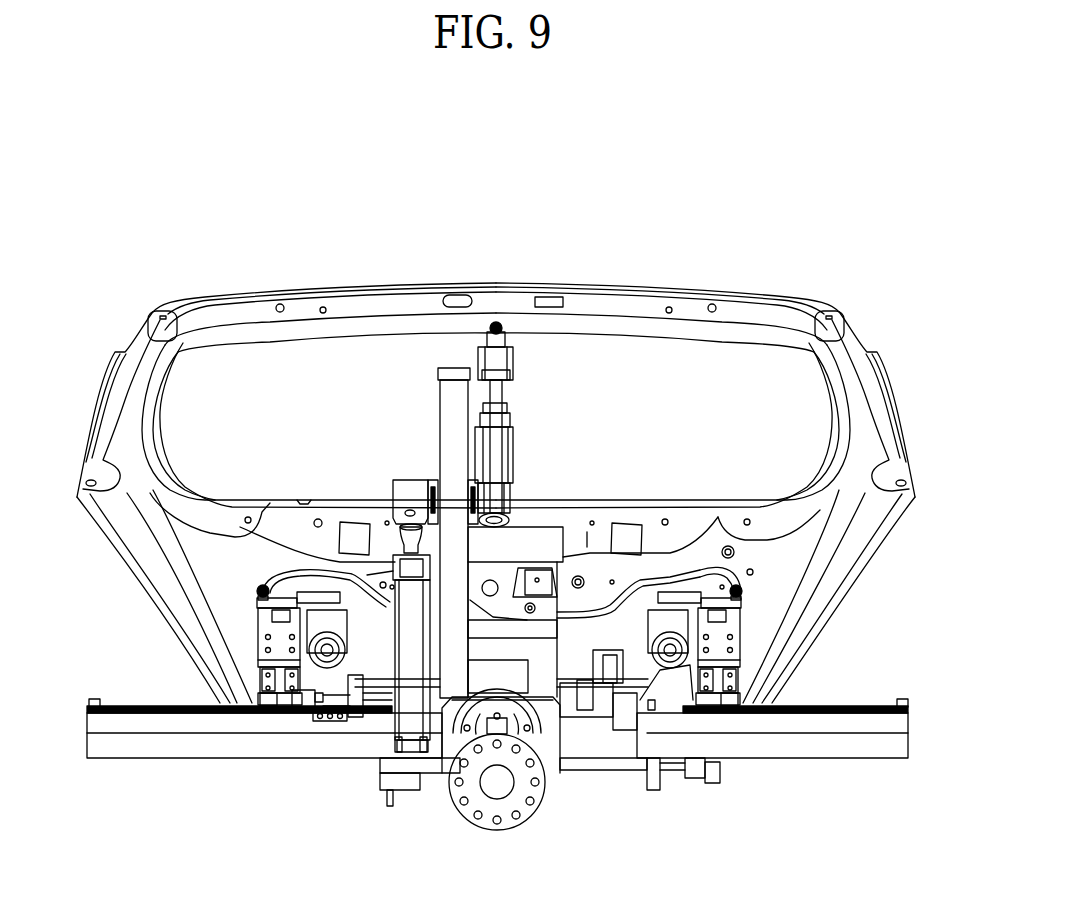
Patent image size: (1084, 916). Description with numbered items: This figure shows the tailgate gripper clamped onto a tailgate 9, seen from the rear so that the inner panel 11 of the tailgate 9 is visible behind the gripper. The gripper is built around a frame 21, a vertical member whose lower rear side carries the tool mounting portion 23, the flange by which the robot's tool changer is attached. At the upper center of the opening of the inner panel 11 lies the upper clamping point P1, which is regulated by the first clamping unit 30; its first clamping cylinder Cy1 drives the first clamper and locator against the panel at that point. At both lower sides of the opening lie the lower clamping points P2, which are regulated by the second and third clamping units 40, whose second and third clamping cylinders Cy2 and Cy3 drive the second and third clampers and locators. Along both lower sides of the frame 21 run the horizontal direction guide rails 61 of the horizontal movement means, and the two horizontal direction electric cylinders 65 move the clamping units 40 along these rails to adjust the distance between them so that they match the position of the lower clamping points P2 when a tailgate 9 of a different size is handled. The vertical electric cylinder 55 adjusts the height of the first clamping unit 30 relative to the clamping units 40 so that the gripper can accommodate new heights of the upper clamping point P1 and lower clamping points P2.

The tailgate 9 is at (803, 272).
The inner panel 11 is at (768, 543).
The frame 21 is at (452, 668).
The tool mounting portion 23 is at (513, 816).
The first clamping unit 30 is at (551, 395).
The second and third clamping units 40 is at (240, 638).
The vertical electric cylinder 55 is at (390, 708).
The horizontal direction guide rails 61 is at (133, 688).
The horizontal direction electric cylinders 65 is at (569, 712).
The first clamping cylinder Cy1 is at (507, 483).
The second clamping cylinder Cy2 is at (677, 661).
The third clamping cylinder Cy3 is at (318, 660).
The upper clamping point P1 is at (497, 312).
The lower clamping points P2 is at (232, 588).